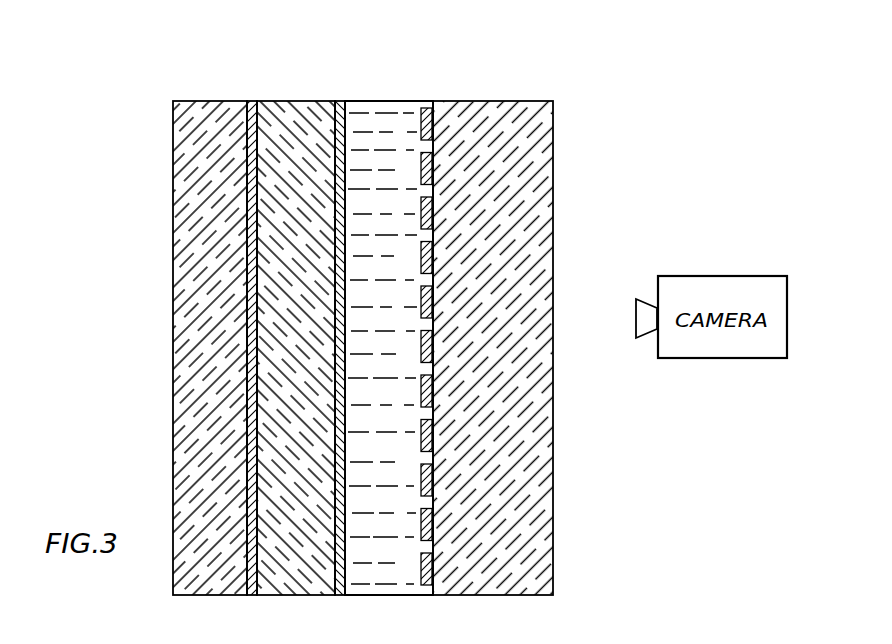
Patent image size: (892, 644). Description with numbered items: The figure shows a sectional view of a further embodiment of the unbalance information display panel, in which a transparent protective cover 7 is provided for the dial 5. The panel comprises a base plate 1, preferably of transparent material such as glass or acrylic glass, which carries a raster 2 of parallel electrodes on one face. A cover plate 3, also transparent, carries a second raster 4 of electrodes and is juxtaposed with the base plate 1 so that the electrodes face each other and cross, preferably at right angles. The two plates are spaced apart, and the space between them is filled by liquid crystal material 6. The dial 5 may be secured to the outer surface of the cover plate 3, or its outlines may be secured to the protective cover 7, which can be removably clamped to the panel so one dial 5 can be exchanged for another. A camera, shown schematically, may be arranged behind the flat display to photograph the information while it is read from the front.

The base plate 1 is at (540, 490).
The raster of parallel electrodes 2 is at (435, 127).
The cover plate 3 is at (308, 583).
The raster of electrodes 4 is at (342, 102).
The dial 5 is at (252, 100).
The liquid crystal material 6 is at (392, 582).
The transparent protective cover 7 is at (187, 390).